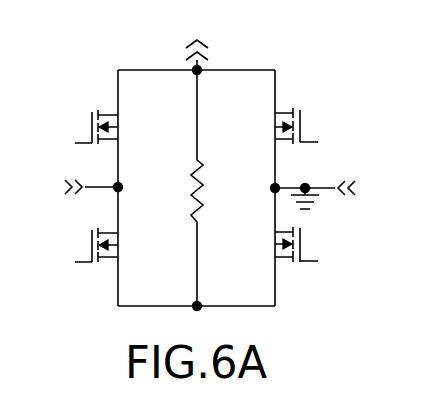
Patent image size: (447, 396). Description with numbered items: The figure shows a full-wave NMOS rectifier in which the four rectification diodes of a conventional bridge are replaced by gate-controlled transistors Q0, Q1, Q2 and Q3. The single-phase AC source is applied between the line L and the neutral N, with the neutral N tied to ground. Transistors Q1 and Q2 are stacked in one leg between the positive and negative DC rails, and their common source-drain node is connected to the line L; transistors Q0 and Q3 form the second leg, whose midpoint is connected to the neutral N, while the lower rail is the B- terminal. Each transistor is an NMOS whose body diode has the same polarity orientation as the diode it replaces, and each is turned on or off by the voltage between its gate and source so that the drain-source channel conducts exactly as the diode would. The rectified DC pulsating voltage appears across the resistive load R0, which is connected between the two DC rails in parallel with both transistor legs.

The gate-controlled transistor Q0 is at (283, 124).
The gate-controlled transistor Q1 is at (113, 125).
The gate-controlled transistor Q2 is at (113, 242).
The gate-controlled transistor Q3 is at (283, 242).
The resistive load R0 is at (182, 188).
The negative DC bus terminal B- is at (177, 319).
The line L is at (82, 187).
The neutral N is at (329, 192).